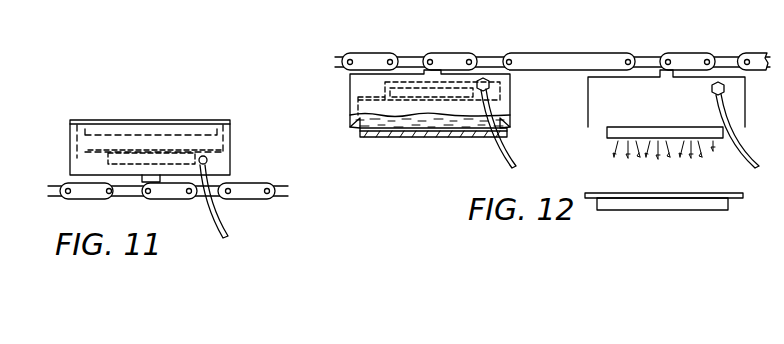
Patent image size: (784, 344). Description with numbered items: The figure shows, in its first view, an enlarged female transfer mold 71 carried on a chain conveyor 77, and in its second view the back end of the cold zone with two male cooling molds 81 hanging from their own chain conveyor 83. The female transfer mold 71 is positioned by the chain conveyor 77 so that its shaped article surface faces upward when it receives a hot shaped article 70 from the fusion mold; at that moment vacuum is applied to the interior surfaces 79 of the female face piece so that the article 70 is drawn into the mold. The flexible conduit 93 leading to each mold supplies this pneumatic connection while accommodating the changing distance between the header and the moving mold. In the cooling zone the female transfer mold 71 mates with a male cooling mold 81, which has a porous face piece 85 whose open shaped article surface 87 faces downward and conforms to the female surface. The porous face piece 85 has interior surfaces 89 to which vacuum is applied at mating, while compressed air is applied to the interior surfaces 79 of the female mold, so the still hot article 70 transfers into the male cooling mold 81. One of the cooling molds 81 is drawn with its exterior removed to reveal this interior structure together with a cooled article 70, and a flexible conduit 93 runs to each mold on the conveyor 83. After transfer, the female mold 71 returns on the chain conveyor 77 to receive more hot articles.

In FIG. 11, the hot shaped article 70 is at (118, 120).
In FIG. 12, the hot shaped article 70 is at (372, 138).
In FIG. 11, the female transfer mold 71 is at (68, 133).
In FIG. 11, the interior surfaces of female mold pieces 79 is at (85, 152).
In FIG. 11, the chain conveyor 77 is at (102, 197).
In FIG. 11, the flexible conduit 93 is at (210, 215).
In FIG. 12, the flexible conduit 93 is at (502, 140).
In FIG. 12, the chain conveyor 83 is at (465, 57).
In FIG. 12, the male cooling mold 81 is at (350, 80).
In FIG. 12, the interior surfaces of porous face pieces 89 is at (360, 100).
In FIG. 12, the porous face piece 85 is at (418, 130).
In FIG. 12, the open shaped article surface 87 is at (462, 140).